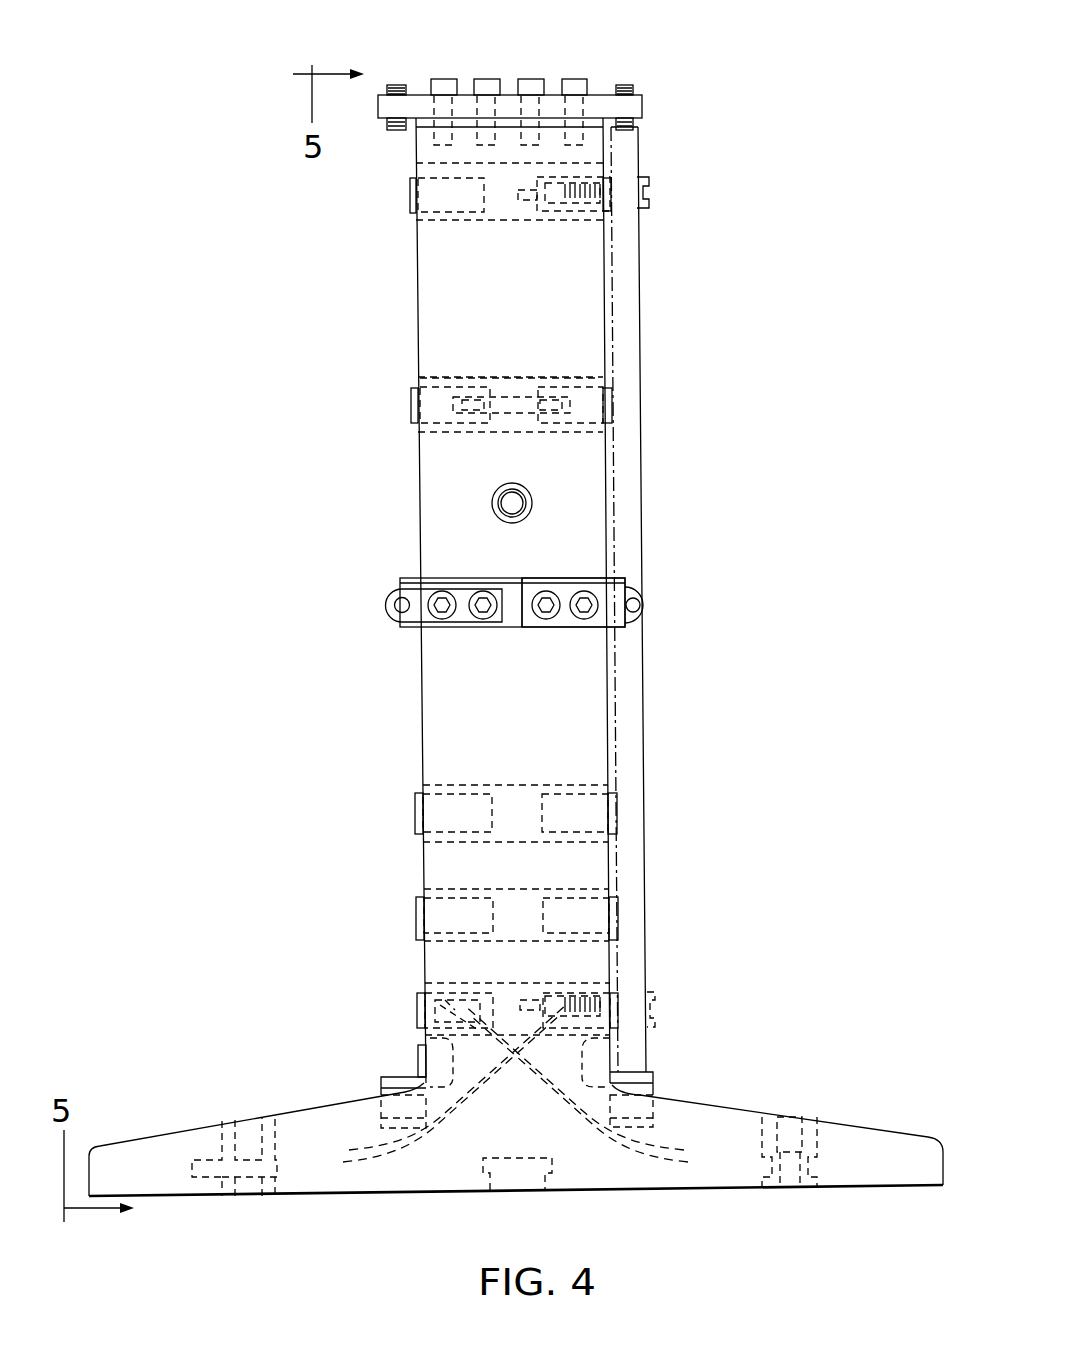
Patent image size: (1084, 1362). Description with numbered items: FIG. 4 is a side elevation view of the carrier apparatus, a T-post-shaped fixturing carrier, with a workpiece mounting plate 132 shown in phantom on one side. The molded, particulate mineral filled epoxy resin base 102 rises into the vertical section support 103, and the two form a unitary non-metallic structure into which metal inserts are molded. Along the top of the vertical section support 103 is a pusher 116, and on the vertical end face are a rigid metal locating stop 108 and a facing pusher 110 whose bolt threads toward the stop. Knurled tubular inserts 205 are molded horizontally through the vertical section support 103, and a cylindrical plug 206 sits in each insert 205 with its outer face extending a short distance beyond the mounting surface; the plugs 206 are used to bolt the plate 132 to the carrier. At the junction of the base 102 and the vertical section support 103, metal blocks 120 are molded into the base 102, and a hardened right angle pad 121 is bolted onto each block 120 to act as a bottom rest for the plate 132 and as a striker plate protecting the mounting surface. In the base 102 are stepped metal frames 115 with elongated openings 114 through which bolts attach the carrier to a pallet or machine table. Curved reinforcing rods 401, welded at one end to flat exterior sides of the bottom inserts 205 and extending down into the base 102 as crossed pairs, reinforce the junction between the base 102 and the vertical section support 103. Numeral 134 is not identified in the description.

The base 102 is at (145, 1145).
The vertical section support 103 is at (423, 722).
The locating stop 108 is at (595, 582).
The pusher 110 is at (380, 584).
The elongated opening 114 is at (790, 1125).
The stepped metal frame 115 is at (806, 1130).
The pusher 116 is at (472, 68).
The metal block 120 is at (382, 1090).
The right angle pad 121 is at (397, 1077).
The plate 132 is at (641, 268).
The rail clip 134 is at (651, 195).
The knurled tubular insert 205 is at (418, 378).
The cylindrical plug 206 is at (412, 390).
The reinforcing rod 401 is at (448, 1112).